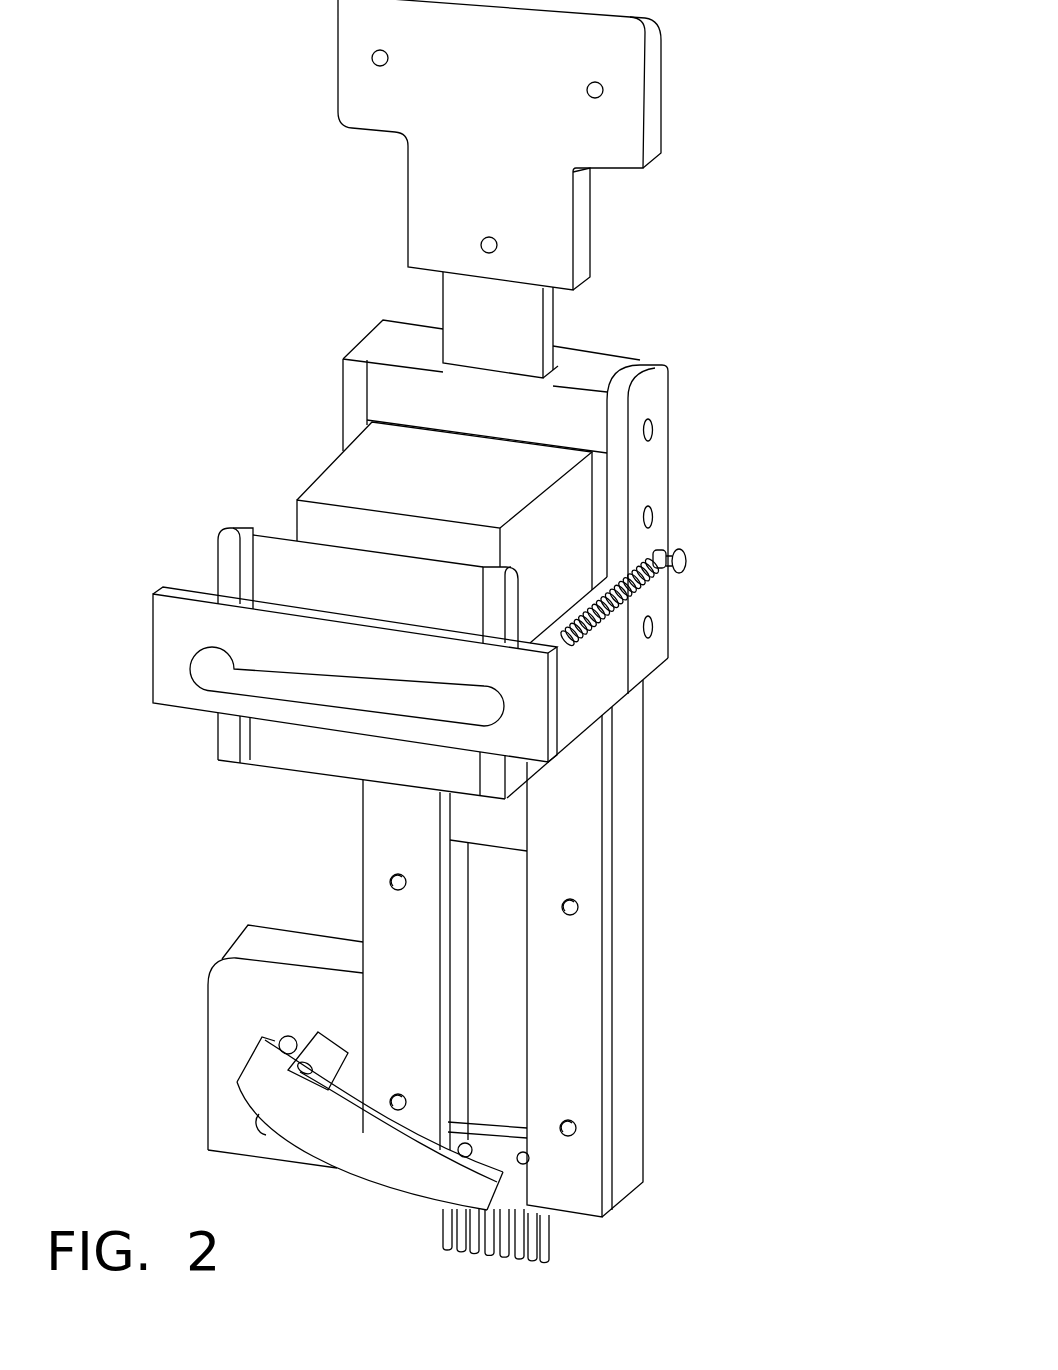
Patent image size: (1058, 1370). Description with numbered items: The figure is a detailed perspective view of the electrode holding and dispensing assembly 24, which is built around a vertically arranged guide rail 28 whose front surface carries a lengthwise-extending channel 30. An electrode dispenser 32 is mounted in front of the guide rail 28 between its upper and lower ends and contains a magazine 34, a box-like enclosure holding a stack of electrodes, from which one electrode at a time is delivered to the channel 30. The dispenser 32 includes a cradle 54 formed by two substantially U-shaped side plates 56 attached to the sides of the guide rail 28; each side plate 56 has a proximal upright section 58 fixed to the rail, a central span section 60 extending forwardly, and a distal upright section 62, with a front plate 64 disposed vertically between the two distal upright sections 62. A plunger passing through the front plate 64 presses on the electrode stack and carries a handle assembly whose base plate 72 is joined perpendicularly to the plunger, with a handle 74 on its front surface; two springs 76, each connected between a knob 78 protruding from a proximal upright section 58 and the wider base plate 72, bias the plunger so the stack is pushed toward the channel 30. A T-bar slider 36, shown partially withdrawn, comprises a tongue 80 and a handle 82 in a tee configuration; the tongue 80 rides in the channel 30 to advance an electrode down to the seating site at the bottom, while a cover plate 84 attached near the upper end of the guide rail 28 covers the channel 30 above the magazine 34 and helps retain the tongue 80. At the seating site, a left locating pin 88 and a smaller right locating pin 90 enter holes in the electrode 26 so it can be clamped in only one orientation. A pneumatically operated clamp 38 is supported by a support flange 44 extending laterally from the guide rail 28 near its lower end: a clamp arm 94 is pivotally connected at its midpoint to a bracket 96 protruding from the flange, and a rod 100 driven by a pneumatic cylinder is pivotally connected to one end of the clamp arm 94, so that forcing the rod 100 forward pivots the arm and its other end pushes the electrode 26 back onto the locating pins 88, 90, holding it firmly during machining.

The electrode holding and dispensing assembly 24 is at (815, 622).
The electrode 26 is at (550, 1238).
The guide rail 28 is at (625, 858).
The channel 30 is at (460, 920).
The electrode dispenser 32 is at (226, 520).
The magazine 34 is at (431, 491).
The T-bar slider 36 is at (610, 260).
The pneumatically operated clamp 38 is at (238, 1102).
The support flange 44 is at (233, 982).
The cradle 54 is at (655, 692).
The side plate 56 is at (647, 657).
The proximal upright section 58 is at (652, 460).
The central span section 60 is at (607, 695).
The distal upright section 62 is at (512, 595).
The front plate 64 is at (300, 750).
The base plate 72 is at (168, 613).
The handle 74 is at (212, 680).
The spring 76 is at (640, 598).
The knob 78 is at (688, 560).
The tongue 80 is at (510, 341).
The handle 82 is at (503, 187).
The cover plate 84 is at (479, 417).
The left locating pin 88 is at (467, 1150).
The right locating pin 90 is at (522, 1158).
The clamp arm 94 is at (362, 1163).
The bracket 96 is at (267, 1127).
The rod 100 is at (283, 1032).